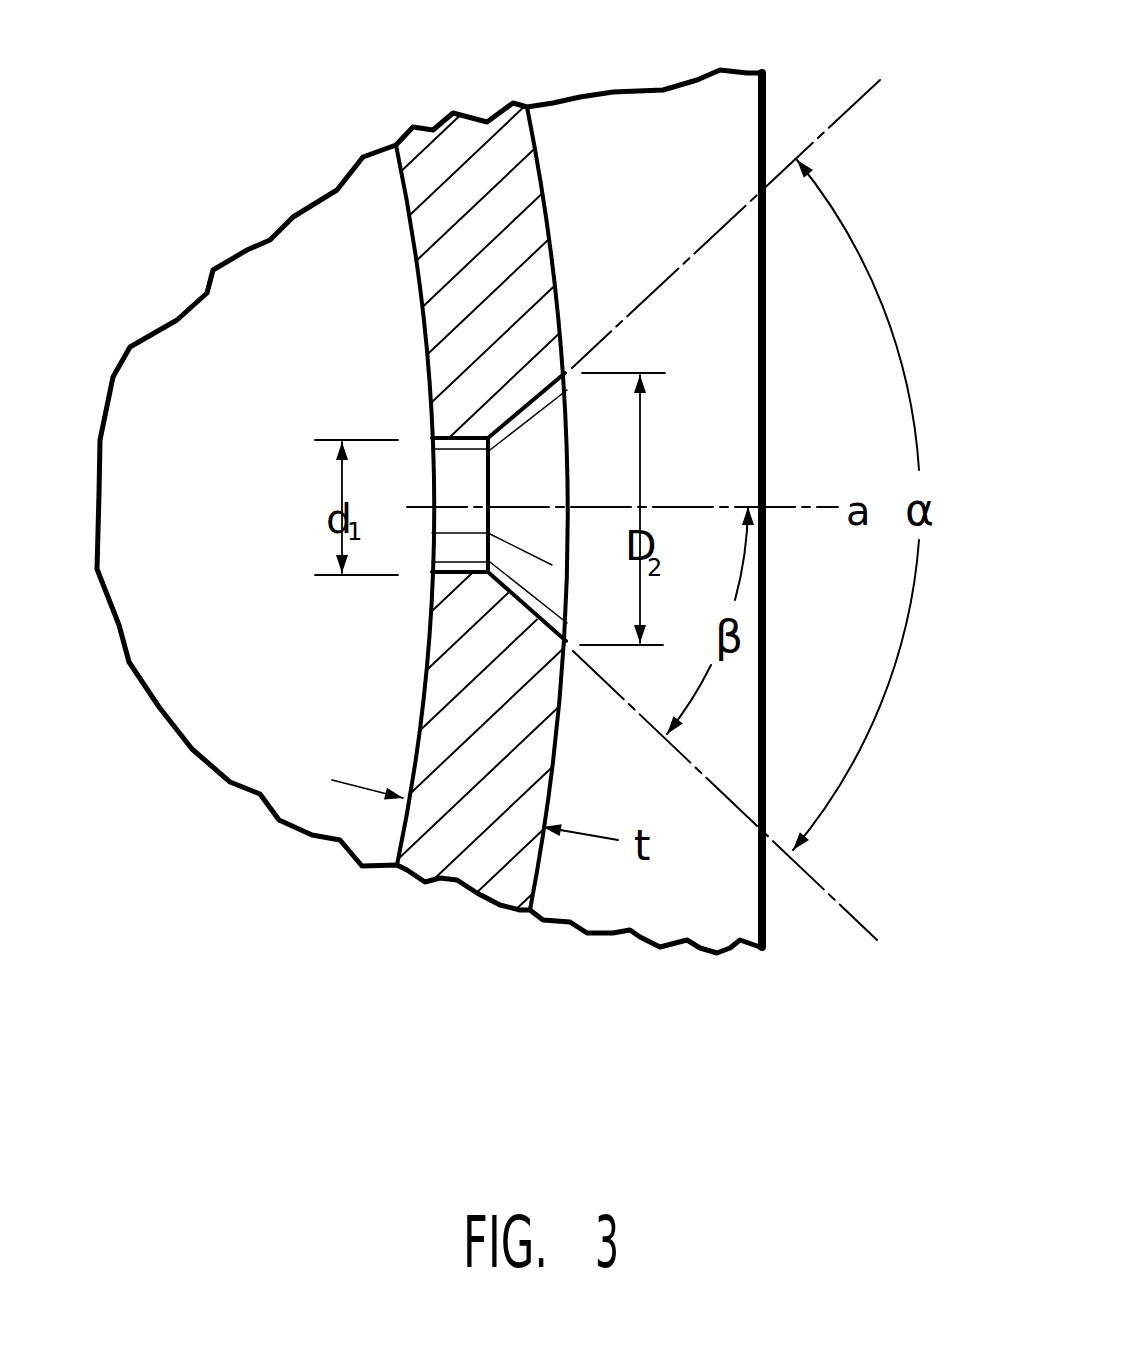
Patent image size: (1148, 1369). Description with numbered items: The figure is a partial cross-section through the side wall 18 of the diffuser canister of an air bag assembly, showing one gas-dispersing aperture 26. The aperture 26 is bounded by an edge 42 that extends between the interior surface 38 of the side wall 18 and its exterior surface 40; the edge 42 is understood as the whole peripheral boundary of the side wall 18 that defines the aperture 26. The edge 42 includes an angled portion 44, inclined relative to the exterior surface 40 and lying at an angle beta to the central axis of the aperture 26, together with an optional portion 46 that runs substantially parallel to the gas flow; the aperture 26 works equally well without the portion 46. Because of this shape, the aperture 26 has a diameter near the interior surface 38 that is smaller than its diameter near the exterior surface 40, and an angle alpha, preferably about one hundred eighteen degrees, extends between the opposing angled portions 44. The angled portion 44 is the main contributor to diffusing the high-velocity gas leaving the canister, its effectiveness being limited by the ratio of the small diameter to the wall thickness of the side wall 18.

The side wall 18 is at (460, 143).
The aperture 26 is at (557, 458).
The interior surface 38 is at (413, 252).
The exterior surface 40 is at (547, 177).
The edge 42 is at (520, 603).
The angled portion 44 is at (527, 404).
The portion 46 is at (460, 438).